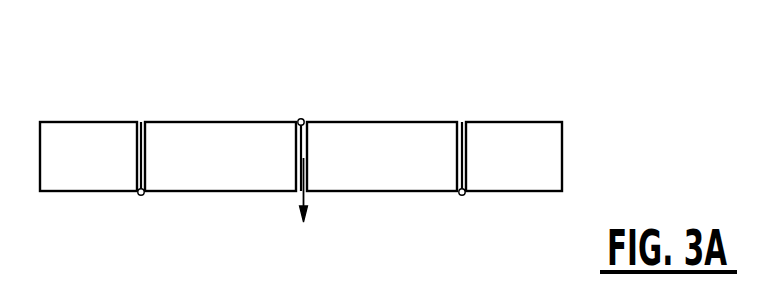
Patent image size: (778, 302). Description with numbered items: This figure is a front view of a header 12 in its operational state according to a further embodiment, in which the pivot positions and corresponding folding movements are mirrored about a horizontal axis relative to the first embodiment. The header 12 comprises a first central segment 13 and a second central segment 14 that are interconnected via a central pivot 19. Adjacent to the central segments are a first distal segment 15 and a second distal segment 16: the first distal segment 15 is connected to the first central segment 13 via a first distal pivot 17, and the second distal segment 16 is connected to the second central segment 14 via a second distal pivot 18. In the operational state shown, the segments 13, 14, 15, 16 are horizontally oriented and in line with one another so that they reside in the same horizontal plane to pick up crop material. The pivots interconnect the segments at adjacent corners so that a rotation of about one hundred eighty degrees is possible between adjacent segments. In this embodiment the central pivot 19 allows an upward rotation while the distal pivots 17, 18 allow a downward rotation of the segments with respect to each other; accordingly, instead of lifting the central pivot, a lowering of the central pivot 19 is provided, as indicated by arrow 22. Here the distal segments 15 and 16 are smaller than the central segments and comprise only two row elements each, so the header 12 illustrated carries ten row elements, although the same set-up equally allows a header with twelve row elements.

The header 12 is at (606, 73).
The first central segment 13 is at (233, 171).
The second central segment 14 is at (396, 171).
The first distal segment 15 is at (101, 171).
The second distal segment 16 is at (527, 171).
The first distal pivot 17 is at (141, 195).
The second distal pivot 18 is at (462, 196).
The central pivot 19 is at (301, 119).
The lowering of the central pivot 22 is at (300, 178).